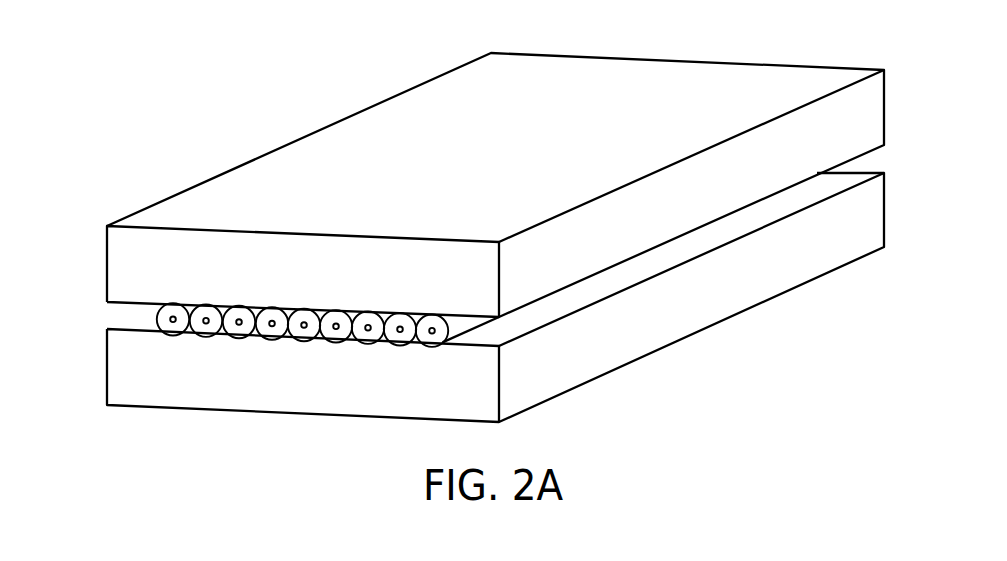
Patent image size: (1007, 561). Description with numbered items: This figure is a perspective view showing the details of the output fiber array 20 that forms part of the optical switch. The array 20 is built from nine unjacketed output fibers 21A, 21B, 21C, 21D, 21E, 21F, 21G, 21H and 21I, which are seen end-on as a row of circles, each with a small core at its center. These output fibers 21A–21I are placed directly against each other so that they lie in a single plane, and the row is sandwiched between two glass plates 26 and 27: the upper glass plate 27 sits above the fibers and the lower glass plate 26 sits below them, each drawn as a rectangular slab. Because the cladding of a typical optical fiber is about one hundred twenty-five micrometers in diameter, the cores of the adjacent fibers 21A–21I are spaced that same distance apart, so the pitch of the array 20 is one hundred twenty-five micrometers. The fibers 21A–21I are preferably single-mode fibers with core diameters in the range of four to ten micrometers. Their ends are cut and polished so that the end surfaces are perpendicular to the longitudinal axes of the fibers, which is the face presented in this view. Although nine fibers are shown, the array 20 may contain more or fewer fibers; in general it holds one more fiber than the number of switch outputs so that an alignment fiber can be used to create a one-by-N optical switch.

The array 20 is at (131, 317).
The output fiber 21A is at (173, 309).
The output fiber 21B is at (207, 331).
The output fiber 21C is at (240, 311).
The output fiber 21D is at (272, 335).
The output fiber 21E is at (304, 313).
The output fiber 21F is at (336, 338).
The output fiber 21G is at (368, 315).
The output fiber 21H is at (400, 340).
The output fiber 21I is at (452, 322).
The glass plate 26 is at (258, 405).
The glass plate 27 is at (217, 190).